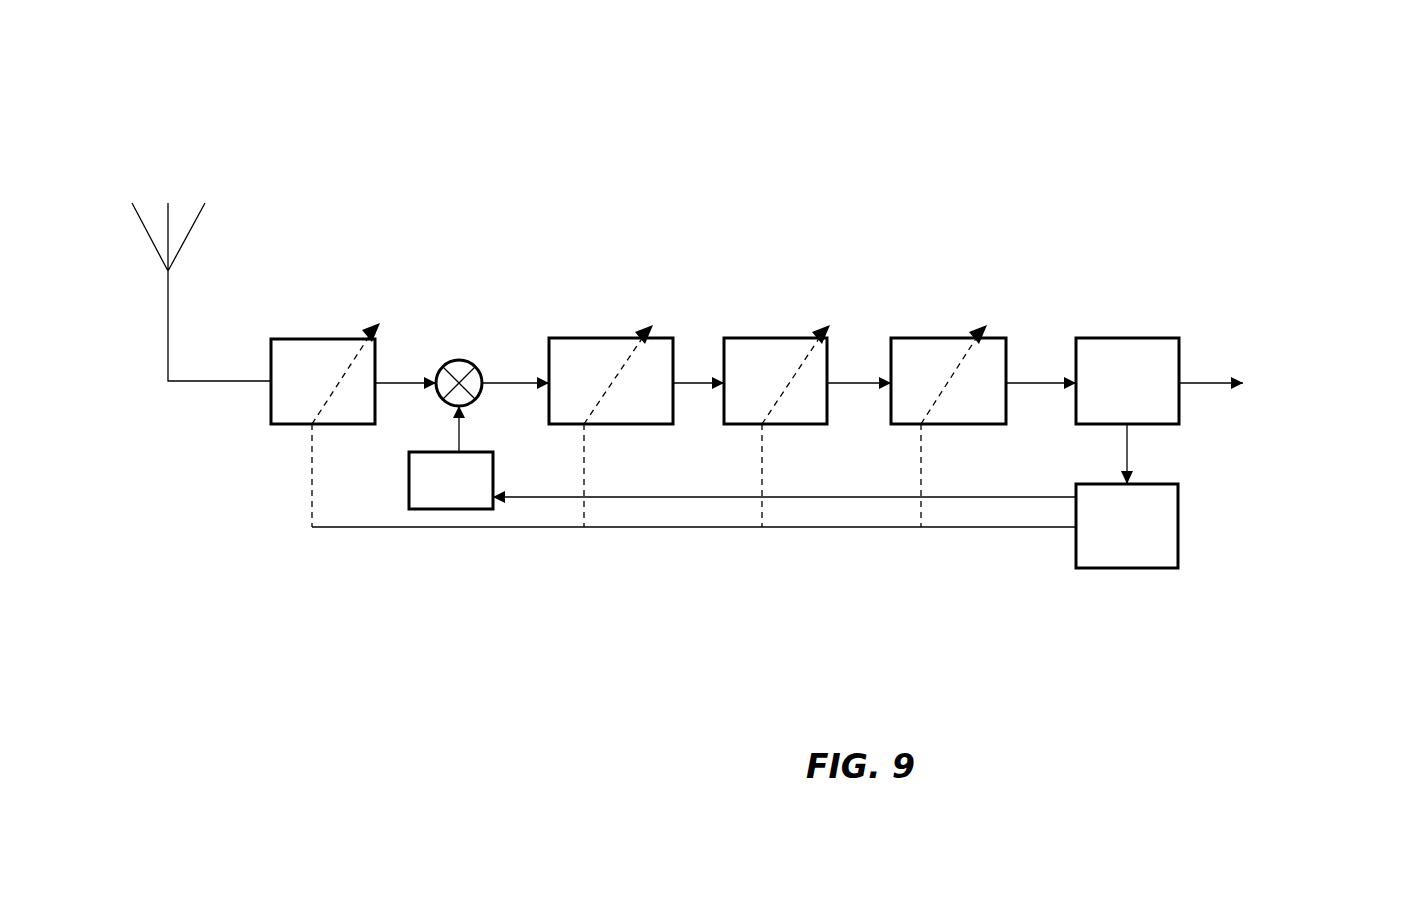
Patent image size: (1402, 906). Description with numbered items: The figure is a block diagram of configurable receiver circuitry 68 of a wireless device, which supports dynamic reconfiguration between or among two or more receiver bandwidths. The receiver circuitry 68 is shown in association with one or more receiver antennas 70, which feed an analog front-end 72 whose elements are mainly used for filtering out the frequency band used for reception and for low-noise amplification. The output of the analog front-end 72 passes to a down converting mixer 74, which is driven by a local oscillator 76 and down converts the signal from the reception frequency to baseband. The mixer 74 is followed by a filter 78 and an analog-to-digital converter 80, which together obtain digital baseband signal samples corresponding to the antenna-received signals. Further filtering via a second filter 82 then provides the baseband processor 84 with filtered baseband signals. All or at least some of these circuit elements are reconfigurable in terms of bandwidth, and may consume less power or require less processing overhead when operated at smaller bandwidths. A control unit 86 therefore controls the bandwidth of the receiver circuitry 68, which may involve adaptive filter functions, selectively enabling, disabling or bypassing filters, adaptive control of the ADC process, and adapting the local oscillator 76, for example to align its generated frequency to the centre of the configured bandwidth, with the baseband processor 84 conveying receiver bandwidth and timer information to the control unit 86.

The receiver circuitry 68 is at (1008, 165).
The receiver antennas 70 is at (168, 303).
The analog front-end 72 is at (287, 343).
The down converting mixer 74 is at (466, 361).
The local oscillator 76 is at (418, 497).
The filter 78 is at (580, 345).
The analog-to-digital converter 80 is at (762, 345).
The filter 82 is at (930, 343).
The baseband processor 84 is at (1119, 343).
The control unit 86 is at (1097, 558).